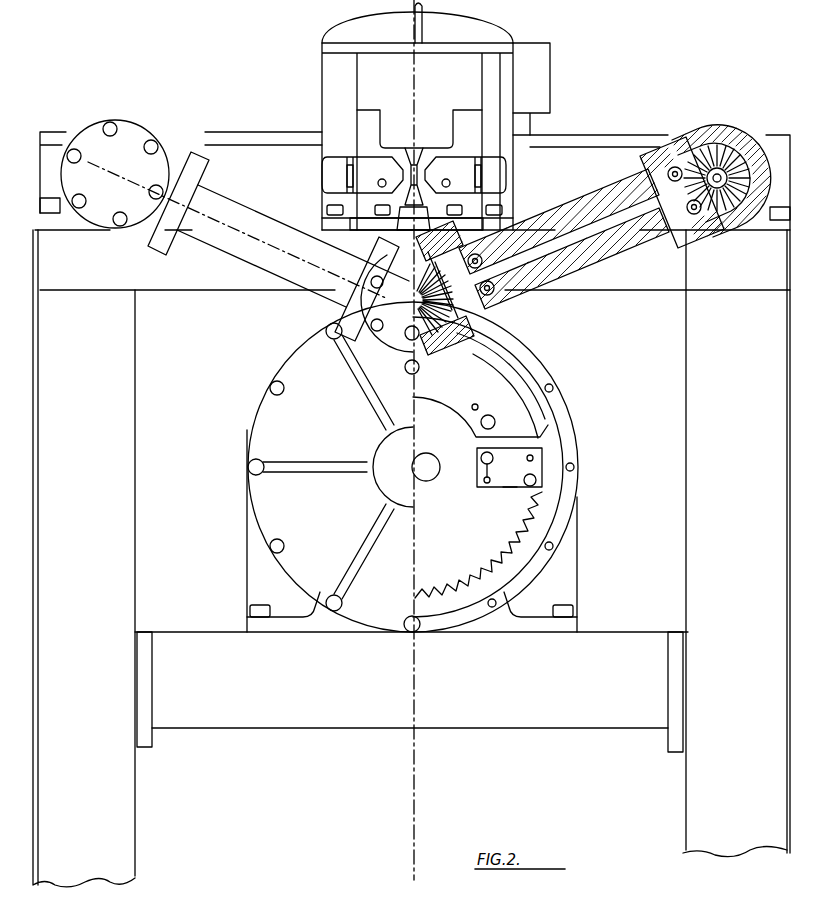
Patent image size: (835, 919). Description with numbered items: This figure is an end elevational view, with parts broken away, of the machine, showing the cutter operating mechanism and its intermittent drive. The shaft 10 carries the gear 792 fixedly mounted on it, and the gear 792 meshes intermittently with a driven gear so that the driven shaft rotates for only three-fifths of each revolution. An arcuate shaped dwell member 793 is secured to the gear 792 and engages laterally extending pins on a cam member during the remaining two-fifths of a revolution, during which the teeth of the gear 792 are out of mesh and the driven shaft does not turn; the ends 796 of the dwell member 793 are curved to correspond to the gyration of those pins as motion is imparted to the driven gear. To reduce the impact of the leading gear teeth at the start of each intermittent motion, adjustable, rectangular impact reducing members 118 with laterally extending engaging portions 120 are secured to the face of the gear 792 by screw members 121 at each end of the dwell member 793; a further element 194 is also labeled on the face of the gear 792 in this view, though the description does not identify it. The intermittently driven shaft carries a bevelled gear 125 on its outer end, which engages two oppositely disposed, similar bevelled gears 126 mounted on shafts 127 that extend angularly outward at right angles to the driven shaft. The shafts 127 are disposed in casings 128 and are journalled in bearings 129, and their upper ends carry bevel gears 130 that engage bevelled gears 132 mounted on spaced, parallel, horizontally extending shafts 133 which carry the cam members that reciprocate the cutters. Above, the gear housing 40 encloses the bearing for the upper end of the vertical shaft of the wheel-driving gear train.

The shaft 10 is at (418, 460).
The gear housing 40 is at (548, 74).
The impact reducing member 118 is at (510, 486).
The engaging portion 120 is at (540, 445).
The screw member 121 is at (481, 486).
The bevelled gear 125 is at (430, 338).
The bevelled gear 126 is at (457, 332).
The shaft 127 is at (602, 238).
The casing 128 is at (258, 258).
The bearing 129 is at (496, 296).
The bevel gear 130 is at (713, 235).
The bevelled gear 132 is at (722, 168).
The shaft 133 is at (716, 168).
The hole 194 is at (493, 416).
The gear 792 is at (500, 553).
The dwell member 793 is at (540, 408).
The end of dwell member 796 is at (507, 382).